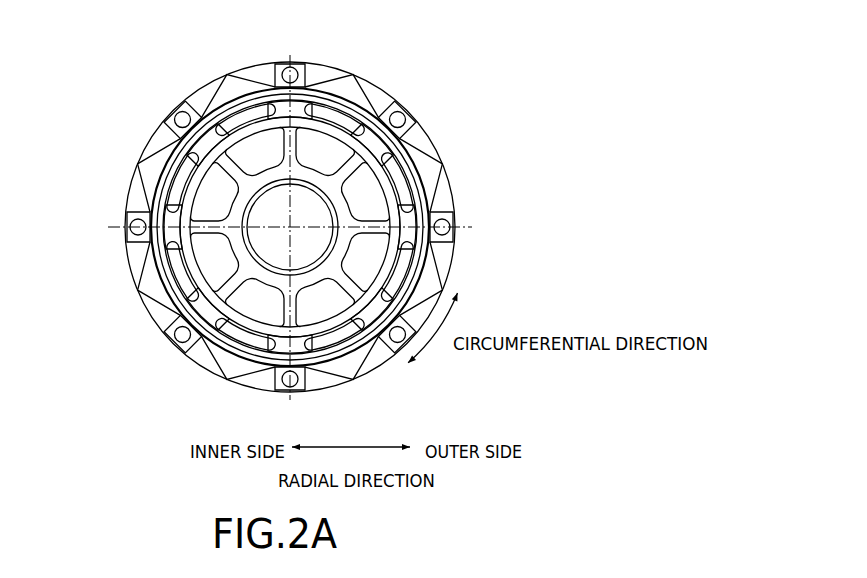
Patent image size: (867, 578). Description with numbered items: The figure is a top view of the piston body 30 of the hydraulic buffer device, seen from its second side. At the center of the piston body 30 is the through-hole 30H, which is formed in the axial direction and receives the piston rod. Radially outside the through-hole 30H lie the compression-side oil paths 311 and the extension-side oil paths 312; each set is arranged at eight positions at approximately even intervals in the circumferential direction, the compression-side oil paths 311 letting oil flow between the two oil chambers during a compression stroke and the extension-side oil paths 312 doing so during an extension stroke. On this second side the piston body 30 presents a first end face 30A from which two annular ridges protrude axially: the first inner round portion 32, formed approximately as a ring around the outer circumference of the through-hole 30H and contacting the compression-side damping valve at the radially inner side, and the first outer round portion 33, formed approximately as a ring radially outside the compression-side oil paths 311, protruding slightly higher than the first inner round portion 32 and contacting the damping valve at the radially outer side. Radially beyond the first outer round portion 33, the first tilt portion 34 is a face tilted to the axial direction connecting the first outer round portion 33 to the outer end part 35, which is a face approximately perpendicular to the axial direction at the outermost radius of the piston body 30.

The piston body 30 is at (148, 95).
The first end face 30A is at (372, 183).
The through-hole 30H is at (333, 239).
The compression-side oil paths 311 is at (402, 183).
The extension-side oil paths 312 is at (133, 221).
The first inner round portion 32 is at (260, 281).
The first outer round portion 33 is at (170, 322).
The first tilt portion 34 is at (152, 261).
The outer end part 35 is at (145, 288).